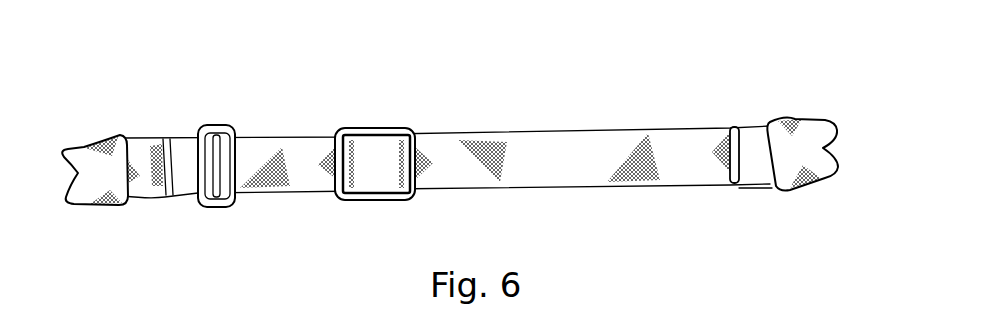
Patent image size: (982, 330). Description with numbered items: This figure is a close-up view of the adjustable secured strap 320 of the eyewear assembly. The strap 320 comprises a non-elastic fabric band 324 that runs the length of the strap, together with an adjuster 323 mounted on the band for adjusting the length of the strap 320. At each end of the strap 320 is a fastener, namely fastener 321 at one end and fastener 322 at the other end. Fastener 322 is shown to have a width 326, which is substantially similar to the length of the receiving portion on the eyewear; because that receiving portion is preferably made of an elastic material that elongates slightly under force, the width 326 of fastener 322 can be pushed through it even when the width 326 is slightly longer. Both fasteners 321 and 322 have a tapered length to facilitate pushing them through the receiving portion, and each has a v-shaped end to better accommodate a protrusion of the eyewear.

The adjustable secured strap 320 is at (203, 102).
The fastener 321 is at (99, 137).
The fastener 322 is at (810, 128).
The adjuster 323 is at (340, 135).
The non-elastic fabric band 324 is at (545, 148).
The width 326 is at (838, 118).